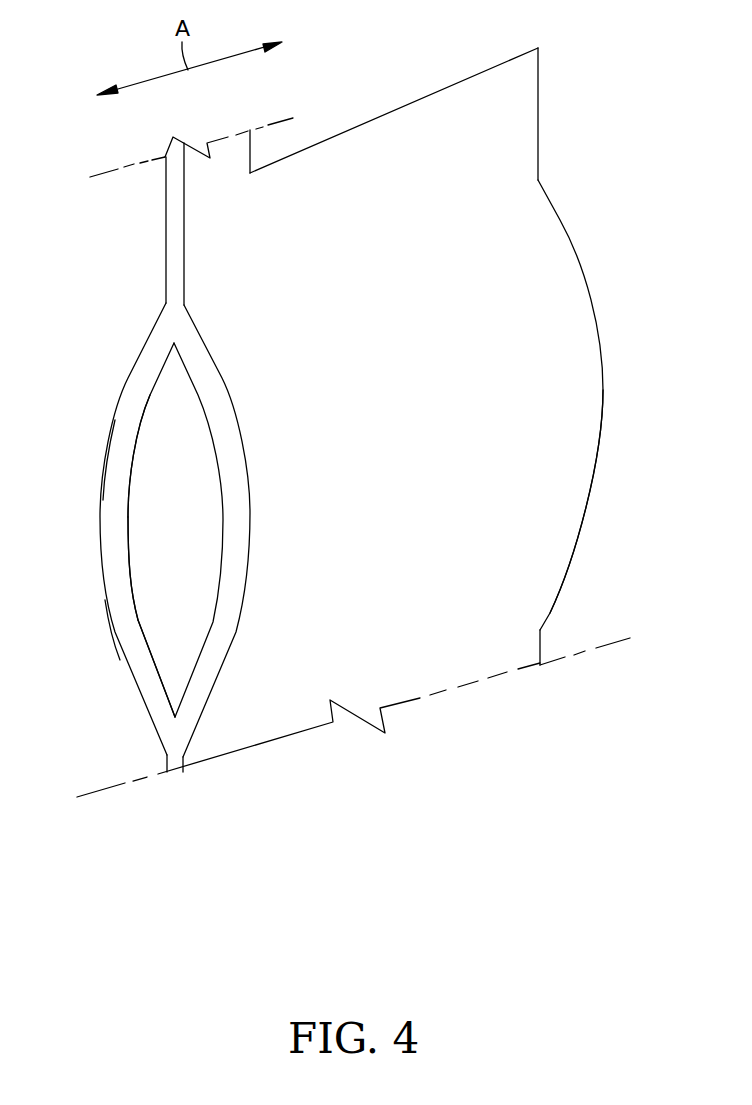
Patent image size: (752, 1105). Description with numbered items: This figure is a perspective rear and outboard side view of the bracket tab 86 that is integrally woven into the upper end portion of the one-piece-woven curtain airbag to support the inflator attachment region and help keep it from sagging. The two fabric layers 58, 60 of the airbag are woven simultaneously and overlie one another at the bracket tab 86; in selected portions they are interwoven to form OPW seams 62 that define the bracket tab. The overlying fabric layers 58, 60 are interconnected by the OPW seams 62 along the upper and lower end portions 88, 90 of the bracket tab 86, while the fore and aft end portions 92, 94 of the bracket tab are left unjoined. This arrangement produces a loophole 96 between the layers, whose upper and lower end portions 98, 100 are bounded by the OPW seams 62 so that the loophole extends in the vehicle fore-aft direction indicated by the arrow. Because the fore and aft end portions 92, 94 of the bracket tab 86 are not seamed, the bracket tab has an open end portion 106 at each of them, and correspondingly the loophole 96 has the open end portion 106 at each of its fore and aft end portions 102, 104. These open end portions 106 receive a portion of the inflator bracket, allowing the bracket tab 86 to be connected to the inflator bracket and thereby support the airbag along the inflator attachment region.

The fabric layer 58 is at (113, 495).
The fabric layer 60 is at (230, 543).
The OPW seams 62 is at (173, 222).
The bracket tab 86 is at (398, 127).
The upper end portion of the bracket tab 88 is at (517, 108).
The lower end portion of the bracket tab 90 is at (482, 678).
The fore end portion of the bracket tab 92 is at (573, 347).
The aft end portion of the bracket tab 94 is at (262, 588).
The loophole 96 is at (162, 620).
The upper end portion of the loophole 98 is at (175, 390).
The lower end portion of the loophole 100 is at (167, 675).
The fore end portion of the loophole 102 is at (595, 502).
The aft end portion of the loophole 104 is at (130, 550).
The open end portion 106 is at (138, 438).